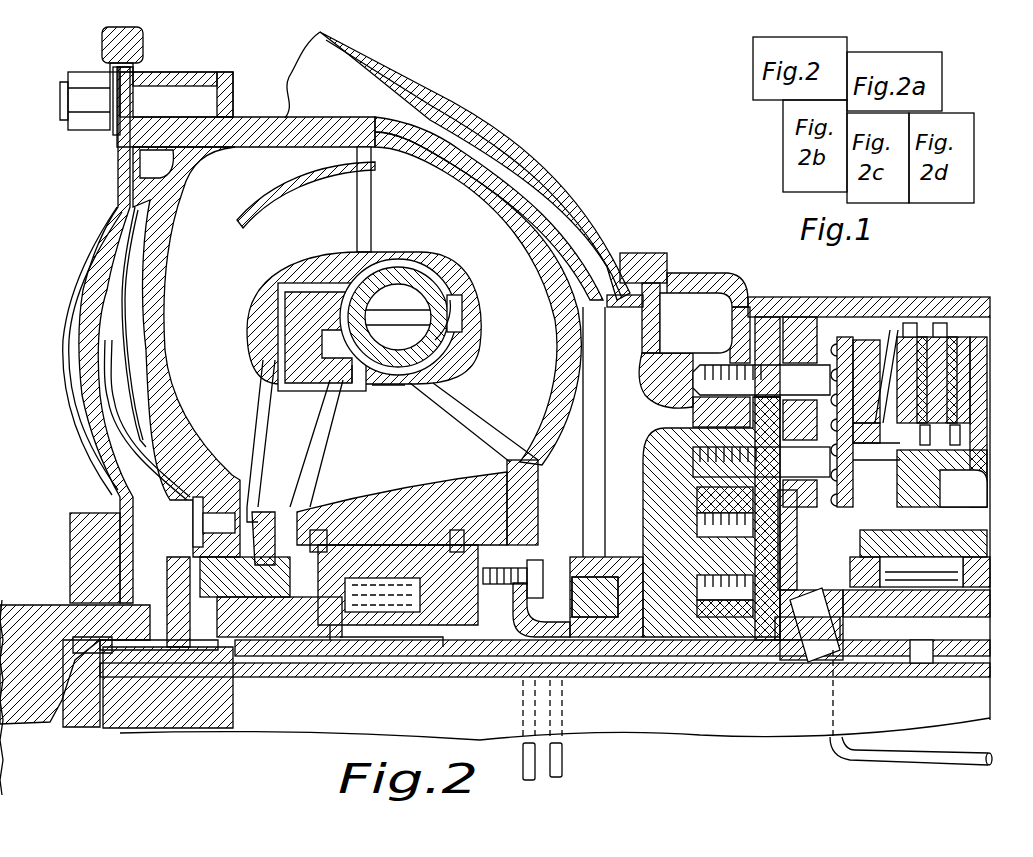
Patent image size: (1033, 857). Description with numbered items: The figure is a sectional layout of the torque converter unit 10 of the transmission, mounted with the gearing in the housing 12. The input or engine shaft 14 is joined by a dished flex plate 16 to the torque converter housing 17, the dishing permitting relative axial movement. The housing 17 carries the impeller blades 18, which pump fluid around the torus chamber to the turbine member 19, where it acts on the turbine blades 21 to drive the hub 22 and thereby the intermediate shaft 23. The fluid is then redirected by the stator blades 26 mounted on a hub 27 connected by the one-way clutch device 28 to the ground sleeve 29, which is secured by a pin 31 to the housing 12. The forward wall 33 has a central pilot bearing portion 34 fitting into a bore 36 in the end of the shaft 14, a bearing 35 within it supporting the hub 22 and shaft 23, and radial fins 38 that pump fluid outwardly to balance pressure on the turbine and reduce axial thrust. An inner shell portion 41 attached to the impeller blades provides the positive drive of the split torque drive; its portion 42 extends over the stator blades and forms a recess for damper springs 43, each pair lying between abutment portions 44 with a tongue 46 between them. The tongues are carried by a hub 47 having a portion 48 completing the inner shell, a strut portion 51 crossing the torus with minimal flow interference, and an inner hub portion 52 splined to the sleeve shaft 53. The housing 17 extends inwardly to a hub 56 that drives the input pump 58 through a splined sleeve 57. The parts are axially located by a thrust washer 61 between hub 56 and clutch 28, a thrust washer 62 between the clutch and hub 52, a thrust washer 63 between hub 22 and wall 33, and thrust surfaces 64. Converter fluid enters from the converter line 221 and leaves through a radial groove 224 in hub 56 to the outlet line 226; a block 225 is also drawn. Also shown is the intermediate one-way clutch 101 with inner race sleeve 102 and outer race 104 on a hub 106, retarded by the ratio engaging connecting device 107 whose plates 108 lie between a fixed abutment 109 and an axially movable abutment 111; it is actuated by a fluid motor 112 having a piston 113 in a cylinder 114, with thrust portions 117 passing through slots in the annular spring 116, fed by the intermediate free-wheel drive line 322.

The torque converter unit 10 is at (496, 119).
The housing 12 is at (640, 258).
The input or engine shaft 14 is at (25, 625).
The flex plate 16 is at (68, 330).
The torque converter housing 17 is at (262, 132).
The impeller blades 18 is at (510, 230).
The turbine member 19 is at (148, 352).
The turbine blades 21 is at (235, 215).
The hub 22 is at (175, 665).
The torque converter output or intermediate shaft 23 is at (265, 715).
The stator blades 26 is at (455, 437).
The hub 27 is at (410, 525).
The one-way clutch device 28 is at (375, 580).
The ground sleeve 29 is at (465, 650).
The pin 31 is at (805, 605).
The forward wall 33 is at (95, 297).
The central pilot bearing portion 34 is at (105, 640).
The bearing 35 is at (165, 655).
The bore 36 is at (95, 642).
The radial fins 38 is at (130, 268).
The inner shell portion 41 is at (425, 252).
The portion 42 is at (400, 372).
The damper springs 43 is at (445, 330).
The abutment portions 44 is at (378, 282).
The tongue 46 is at (452, 302).
The hub 47 is at (315, 305).
The portion 48 is at (352, 380).
The strut portion 51 is at (282, 420).
The inner hub portion 52 is at (274, 515).
The sleeve shaft 53 is at (368, 660).
The hub 56 is at (500, 625).
The sleeve 57 is at (540, 620).
The input pump 58 is at (705, 520).
The thrust washer 61 is at (447, 625).
The thrust washer 62 is at (330, 636).
The thrust washer 63 is at (190, 560).
The thrust surfaces 64 is at (225, 606).
The one-way clutch 101 is at (948, 570).
The inner race sleeve 102 is at (975, 605).
The outer race 104 is at (950, 545).
The hub 106 is at (920, 510).
The ratio engaging connecting device 107 is at (927, 322).
The plates 108 is at (948, 330).
The fixed abutment 109 is at (968, 380).
The axially movable abutment 111 is at (910, 397).
The fluid motor 112 is at (830, 345).
The piston 113 is at (835, 448).
The cylinder 114 is at (853, 460).
The annular spring 116 is at (888, 335).
The thrust portions 117 is at (895, 420).
The converter line 221 is at (563, 765).
The radial groove 224 is at (443, 535).
The block 225 is at (328, 530).
The outlet line 226 is at (530, 770).
The intermediate free-wheel drive line 322 is at (950, 758).